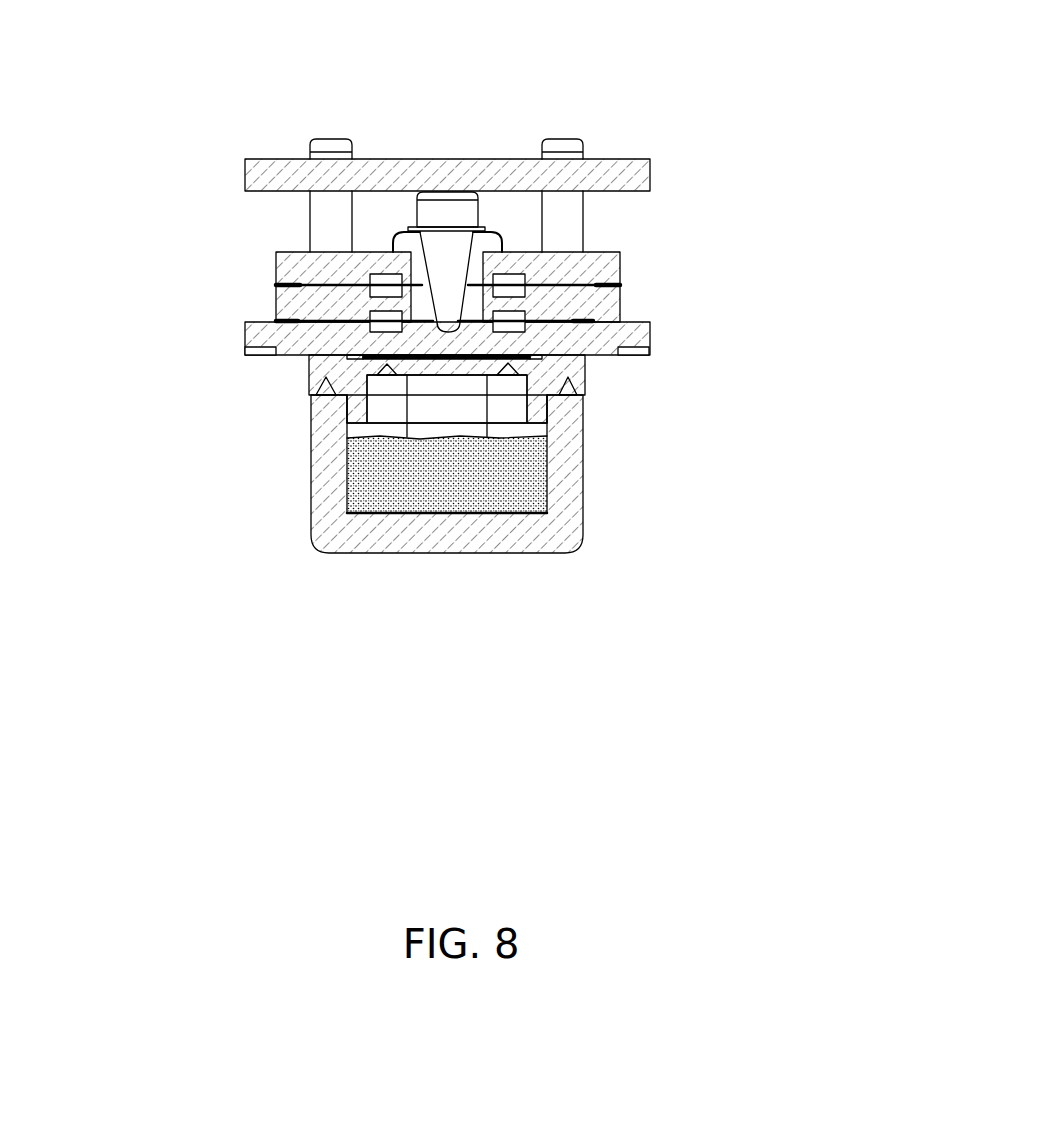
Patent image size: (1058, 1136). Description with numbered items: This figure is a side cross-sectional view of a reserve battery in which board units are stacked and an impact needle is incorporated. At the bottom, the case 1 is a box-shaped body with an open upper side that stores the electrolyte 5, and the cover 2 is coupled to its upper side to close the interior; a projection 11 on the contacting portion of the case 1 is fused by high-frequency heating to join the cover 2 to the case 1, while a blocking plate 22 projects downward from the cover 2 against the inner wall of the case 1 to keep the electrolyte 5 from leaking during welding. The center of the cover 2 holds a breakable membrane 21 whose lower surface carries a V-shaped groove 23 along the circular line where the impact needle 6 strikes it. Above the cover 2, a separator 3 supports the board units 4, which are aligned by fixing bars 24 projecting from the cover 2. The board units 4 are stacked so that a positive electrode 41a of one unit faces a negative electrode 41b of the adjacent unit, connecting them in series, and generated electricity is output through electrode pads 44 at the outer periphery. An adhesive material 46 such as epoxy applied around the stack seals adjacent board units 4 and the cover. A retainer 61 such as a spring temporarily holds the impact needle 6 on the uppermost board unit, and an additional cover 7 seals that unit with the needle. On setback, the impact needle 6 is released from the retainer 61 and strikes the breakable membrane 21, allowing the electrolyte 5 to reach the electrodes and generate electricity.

The case 1 is at (567, 518).
The cover 2 is at (577, 373).
The separator 3 is at (308, 358).
The board unit 4 is at (620, 338).
The electrolyte 5 is at (360, 477).
The impact needle 6 is at (453, 212).
The additional cover 7 is at (297, 172).
The projection 11 is at (310, 387).
The breakable membrane 21 is at (450, 358).
The blocking plate 22 is at (347, 408).
The groove 23 is at (550, 395).
The fixing bar 24 is at (572, 147).
The positive electrode 41a is at (513, 328).
The negative electrode 41b is at (367, 318).
The electrode pad 44 is at (257, 348).
The adhesive material 46 is at (620, 322).
The retainer 61 is at (395, 237).